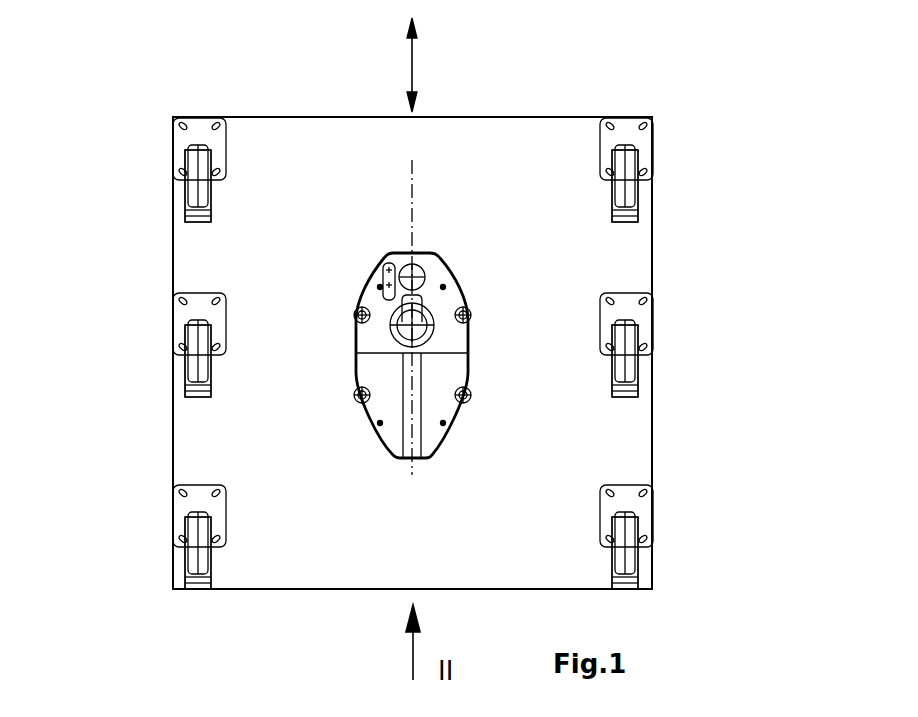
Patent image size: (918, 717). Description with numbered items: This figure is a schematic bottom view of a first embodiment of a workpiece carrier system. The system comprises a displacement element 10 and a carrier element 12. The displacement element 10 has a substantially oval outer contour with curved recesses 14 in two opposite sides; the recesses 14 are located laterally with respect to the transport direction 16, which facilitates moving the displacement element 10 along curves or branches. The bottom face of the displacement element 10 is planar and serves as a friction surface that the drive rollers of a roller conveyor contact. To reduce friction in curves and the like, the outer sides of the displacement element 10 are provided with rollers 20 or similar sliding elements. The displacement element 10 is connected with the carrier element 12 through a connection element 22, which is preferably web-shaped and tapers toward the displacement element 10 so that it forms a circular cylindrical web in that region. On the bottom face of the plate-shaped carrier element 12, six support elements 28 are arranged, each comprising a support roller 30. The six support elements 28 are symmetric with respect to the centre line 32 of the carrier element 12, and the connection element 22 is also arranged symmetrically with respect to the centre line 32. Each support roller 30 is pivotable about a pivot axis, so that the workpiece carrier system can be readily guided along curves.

The displacement element 10 is at (447, 258).
The carrier element 12 is at (612, 250).
The curved recesses 14 is at (356, 338).
The transport direction 16 is at (412, 60).
The rollers 20 is at (353, 315).
The connection element 22 is at (378, 340).
The support elements 28 is at (140, 155).
The support roller 30 is at (197, 197).
The centre line 32 is at (412, 213).